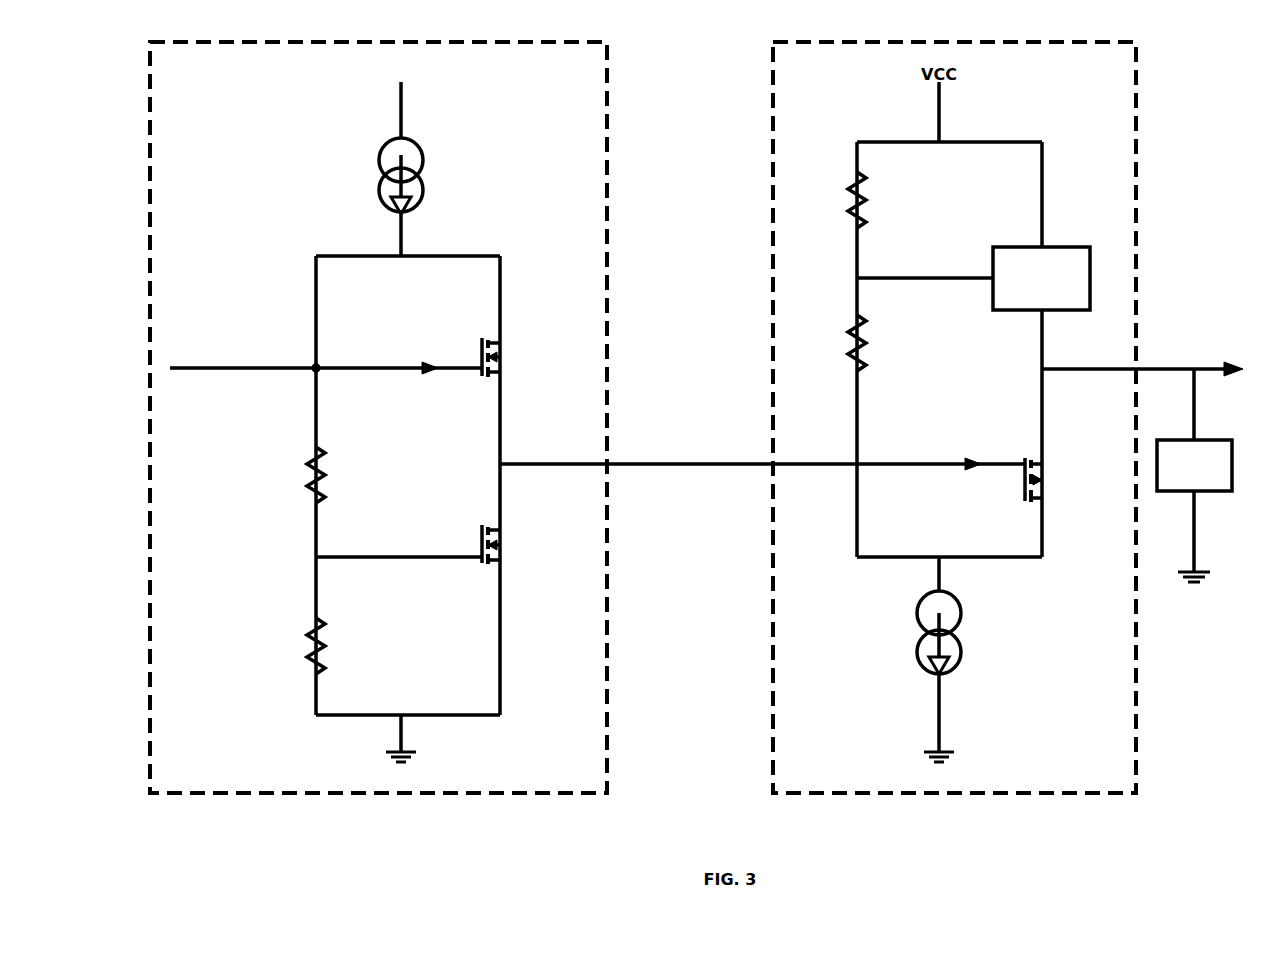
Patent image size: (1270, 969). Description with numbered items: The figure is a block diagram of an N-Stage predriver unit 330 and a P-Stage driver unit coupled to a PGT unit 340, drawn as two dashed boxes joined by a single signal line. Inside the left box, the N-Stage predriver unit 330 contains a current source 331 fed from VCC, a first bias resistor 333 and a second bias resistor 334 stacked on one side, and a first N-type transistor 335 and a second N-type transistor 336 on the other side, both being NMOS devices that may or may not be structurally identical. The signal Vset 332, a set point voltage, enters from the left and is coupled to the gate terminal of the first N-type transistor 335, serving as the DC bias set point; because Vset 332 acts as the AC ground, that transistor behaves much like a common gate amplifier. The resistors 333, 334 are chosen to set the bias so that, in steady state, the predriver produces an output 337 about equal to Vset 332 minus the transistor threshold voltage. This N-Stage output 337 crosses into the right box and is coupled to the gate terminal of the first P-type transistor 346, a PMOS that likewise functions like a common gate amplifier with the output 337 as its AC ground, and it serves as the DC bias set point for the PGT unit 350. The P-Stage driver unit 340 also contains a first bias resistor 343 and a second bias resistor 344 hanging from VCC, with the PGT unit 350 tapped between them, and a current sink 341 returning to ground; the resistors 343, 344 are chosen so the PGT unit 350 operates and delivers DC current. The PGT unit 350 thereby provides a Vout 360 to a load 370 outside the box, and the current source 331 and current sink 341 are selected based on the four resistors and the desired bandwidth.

The N-Stage predriver unit 330 is at (378, 417).
The current source 331 is at (435, 160).
The Vset 332 is at (326, 346).
The first bias resistor 333 is at (284, 475).
The second bias resistor 334 is at (282, 646).
The first N-type transistor 335 is at (525, 358).
The second N-type transistor 336 is at (442, 546).
The output 337 is at (762, 446).
The P-Stage driver unit coupled to a PGT unit 340 is at (954, 417).
The current sink 341 is at (973, 659).
The first bias resistor 343 is at (886, 200).
The second bias resistor 344 is at (886, 343).
The first P-type transistor 346 is at (1063, 494).
The PGT unit 350 is at (973, 278).
The Vout 360 is at (1142, 342).
The load 370 is at (1194, 475).